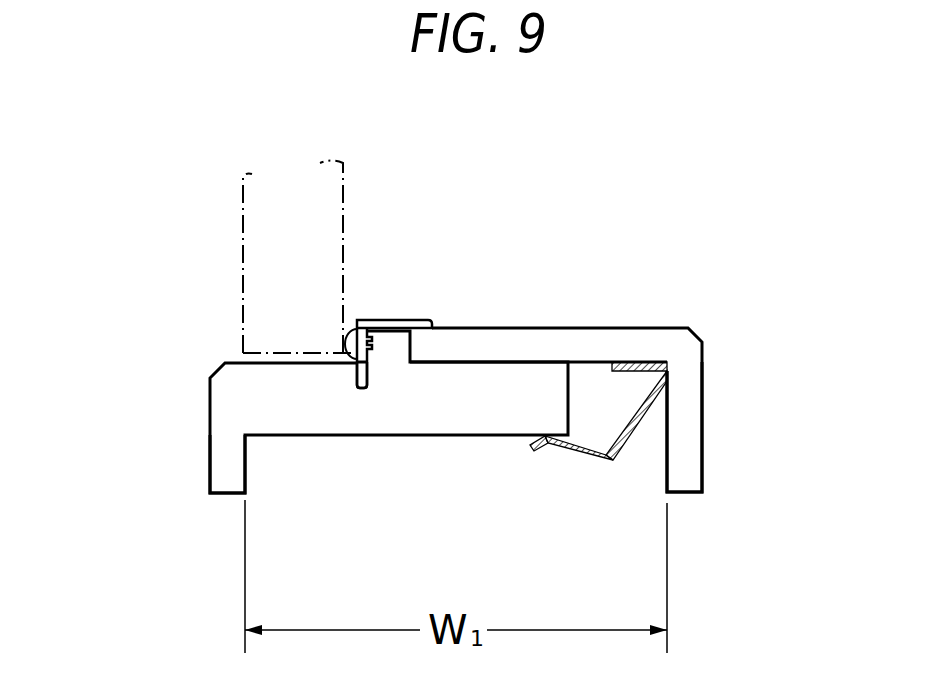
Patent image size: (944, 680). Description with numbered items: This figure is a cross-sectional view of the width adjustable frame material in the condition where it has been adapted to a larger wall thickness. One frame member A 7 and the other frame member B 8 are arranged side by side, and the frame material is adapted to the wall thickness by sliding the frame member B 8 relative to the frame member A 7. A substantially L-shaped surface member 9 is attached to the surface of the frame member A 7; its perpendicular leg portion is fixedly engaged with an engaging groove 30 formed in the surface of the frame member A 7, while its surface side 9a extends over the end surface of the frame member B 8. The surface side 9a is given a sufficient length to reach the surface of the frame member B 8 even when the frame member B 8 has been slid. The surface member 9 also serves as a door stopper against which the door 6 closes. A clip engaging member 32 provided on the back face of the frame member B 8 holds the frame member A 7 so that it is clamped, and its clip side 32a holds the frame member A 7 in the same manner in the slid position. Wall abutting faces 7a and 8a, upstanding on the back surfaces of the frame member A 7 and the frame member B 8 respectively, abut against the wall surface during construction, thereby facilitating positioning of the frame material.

The door 6 is at (288, 243).
The frame member A 7 is at (228, 400).
The wall abutting face 7a is at (246, 450).
The frame member B 8 is at (520, 327).
The wall abutting face 8a is at (665, 462).
The surface member 9 is at (358, 316).
The surface side 9a is at (402, 318).
The engaging groove 30 is at (372, 375).
The clip engaging member 32 is at (645, 413).
The clip side 32a is at (557, 444).